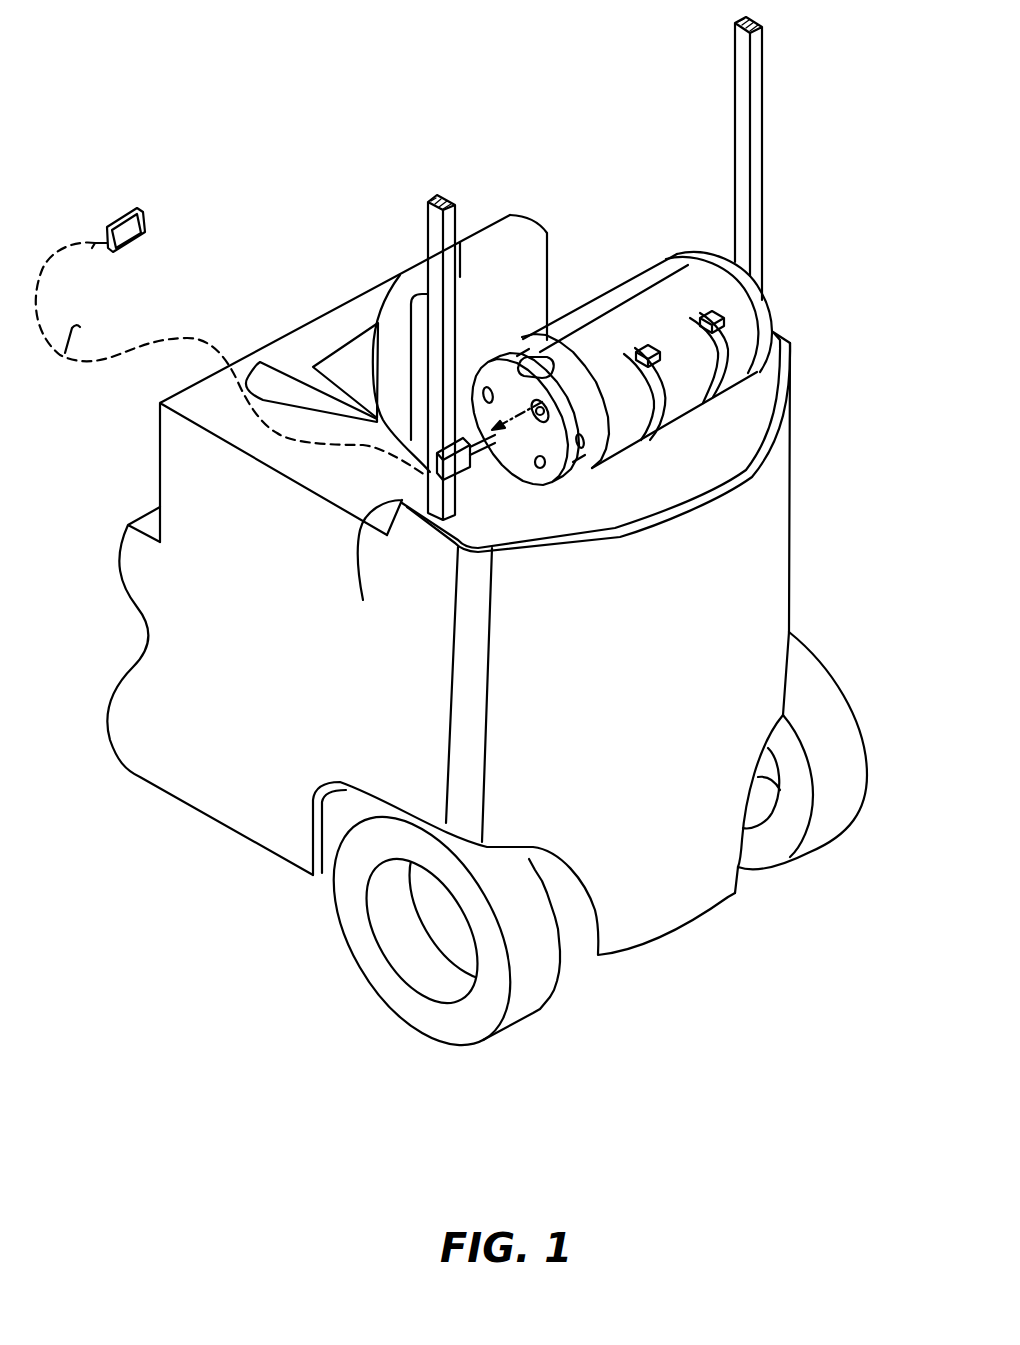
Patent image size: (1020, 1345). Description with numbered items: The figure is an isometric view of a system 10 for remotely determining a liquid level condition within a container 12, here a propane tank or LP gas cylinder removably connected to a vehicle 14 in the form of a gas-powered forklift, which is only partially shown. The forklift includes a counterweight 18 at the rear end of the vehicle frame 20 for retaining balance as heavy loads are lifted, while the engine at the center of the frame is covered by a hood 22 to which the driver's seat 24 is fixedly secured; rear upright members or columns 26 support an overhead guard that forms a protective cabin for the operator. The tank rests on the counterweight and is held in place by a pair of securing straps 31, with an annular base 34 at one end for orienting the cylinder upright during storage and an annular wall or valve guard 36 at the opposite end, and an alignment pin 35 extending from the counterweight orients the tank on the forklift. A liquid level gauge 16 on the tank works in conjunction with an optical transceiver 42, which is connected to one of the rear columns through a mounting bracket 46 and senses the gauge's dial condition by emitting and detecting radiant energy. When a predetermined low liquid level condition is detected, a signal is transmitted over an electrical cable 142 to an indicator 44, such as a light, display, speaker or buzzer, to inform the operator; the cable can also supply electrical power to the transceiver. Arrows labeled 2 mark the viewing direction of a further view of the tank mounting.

The section line 2 is at (540, 432).
The system 10 is at (520, 510).
The container 12 is at (628, 290).
The vehicle 14 is at (795, 457).
The liquid level gauge 16 is at (530, 407).
The counterweight 18 is at (787, 553).
The vehicle frame 20 is at (163, 620).
The hood 22 is at (170, 472).
The driver's seat 24 is at (297, 350).
The rear upright members or columns 26 is at (757, 87).
The securing straps 31 is at (717, 395).
The annular base 34 is at (720, 252).
The alignment pin 35 is at (543, 463).
The annular wall or valve guard 36 is at (457, 462).
The optical transceiver 42 is at (371, 566).
The indicator 44 is at (138, 220).
The mounting bracket 46 is at (378, 323).
The electrical cable 142 is at (107, 337).